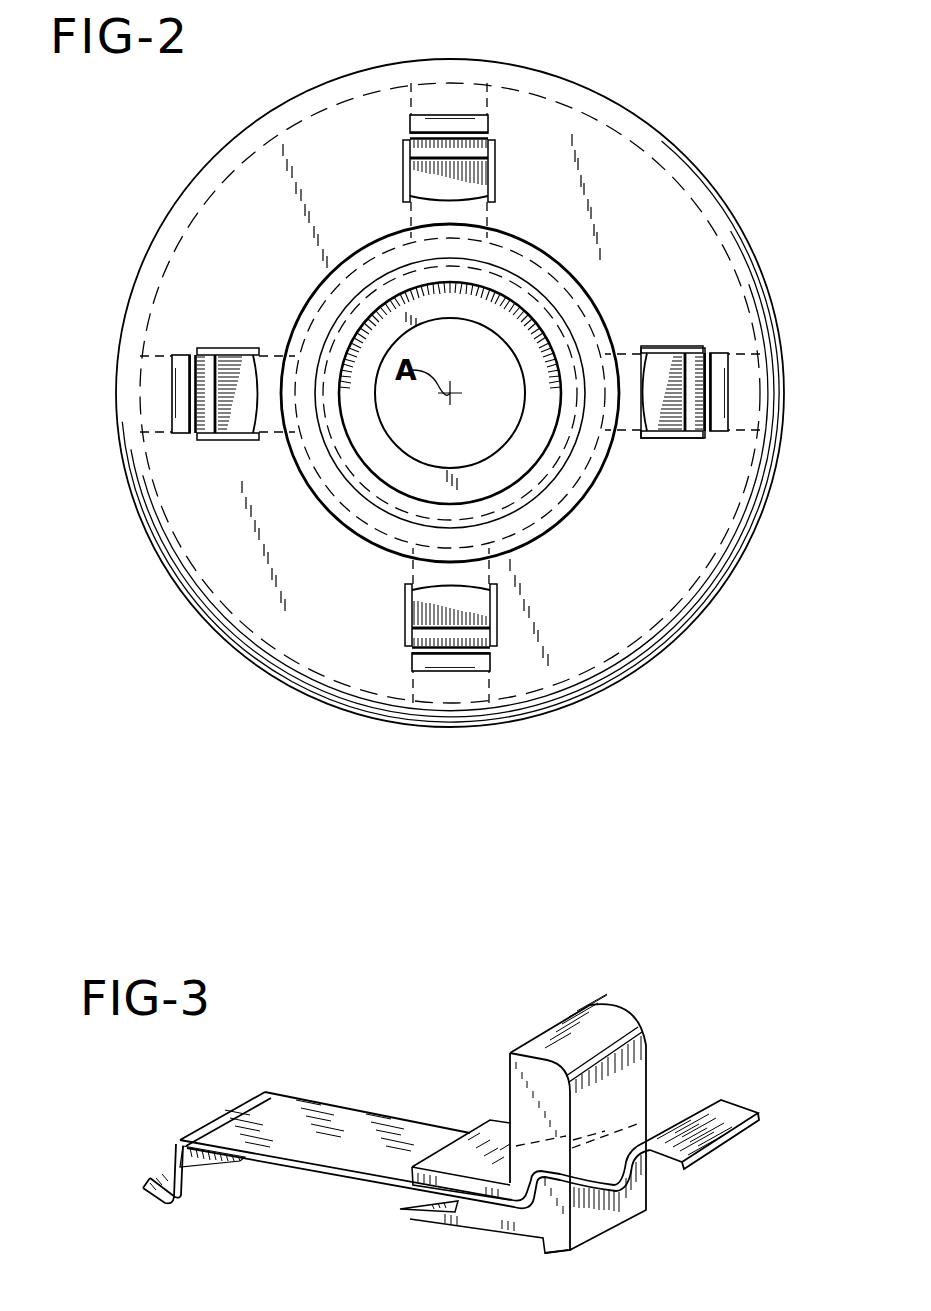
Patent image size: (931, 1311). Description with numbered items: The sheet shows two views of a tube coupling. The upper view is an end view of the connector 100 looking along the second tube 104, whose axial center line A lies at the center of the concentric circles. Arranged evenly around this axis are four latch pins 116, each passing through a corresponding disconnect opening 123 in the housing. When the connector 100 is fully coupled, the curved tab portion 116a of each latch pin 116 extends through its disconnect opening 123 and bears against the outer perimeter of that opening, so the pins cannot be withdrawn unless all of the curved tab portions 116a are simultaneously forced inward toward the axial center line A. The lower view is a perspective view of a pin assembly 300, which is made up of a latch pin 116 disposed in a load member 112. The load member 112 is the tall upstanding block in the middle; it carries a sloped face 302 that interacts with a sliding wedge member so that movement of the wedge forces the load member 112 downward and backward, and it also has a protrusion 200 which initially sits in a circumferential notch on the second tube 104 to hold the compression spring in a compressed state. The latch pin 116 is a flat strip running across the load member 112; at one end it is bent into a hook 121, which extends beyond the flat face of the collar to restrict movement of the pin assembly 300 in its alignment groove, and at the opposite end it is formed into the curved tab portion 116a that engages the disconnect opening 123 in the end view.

In FIG. 2, the connector 100 is at (668, 149).
In FIG. 2, the second tube 104 is at (548, 328).
In FIG. 2, the latch pin 116 is at (720, 391).
In FIG. 3, the latch pin 116 is at (355, 1120).
In FIG. 2, the disconnect opening 123 is at (672, 438).
In FIG. 3, the pin assembly 300 is at (465, 1120).
In FIG. 3, the load member 112 is at (605, 1025).
In FIG. 3, the curved tab portion 116a is at (653, 1167).
In FIG. 3, the protrusion 200 is at (556, 1255).
In FIG. 3, the sloped face 302 is at (440, 1200).
In FIG. 3, the hook 121 is at (200, 1178).